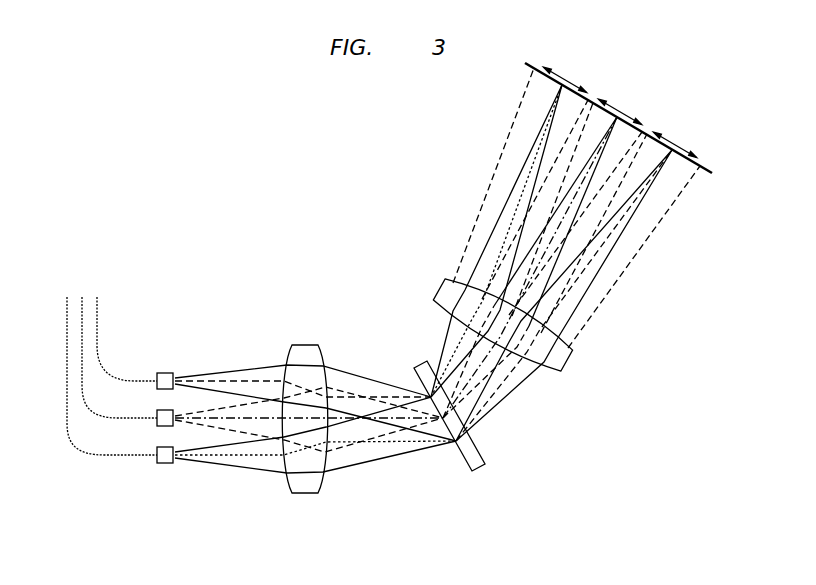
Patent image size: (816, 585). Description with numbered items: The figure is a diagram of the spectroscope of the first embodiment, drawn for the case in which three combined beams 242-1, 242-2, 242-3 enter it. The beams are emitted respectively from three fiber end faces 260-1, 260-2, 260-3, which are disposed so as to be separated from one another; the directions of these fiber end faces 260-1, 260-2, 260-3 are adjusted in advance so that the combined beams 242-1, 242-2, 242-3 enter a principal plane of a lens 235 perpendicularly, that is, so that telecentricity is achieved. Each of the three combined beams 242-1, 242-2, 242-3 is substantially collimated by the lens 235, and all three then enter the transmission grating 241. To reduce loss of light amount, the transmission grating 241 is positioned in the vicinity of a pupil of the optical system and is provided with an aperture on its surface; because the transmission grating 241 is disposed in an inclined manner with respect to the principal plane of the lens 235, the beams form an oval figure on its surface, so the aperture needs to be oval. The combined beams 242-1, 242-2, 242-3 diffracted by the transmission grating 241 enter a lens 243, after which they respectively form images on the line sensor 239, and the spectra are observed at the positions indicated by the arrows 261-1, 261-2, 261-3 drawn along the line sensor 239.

The line sensor 239 is at (710, 176).
The arrow indicating spectrum position 261-1 is at (687, 131).
The arrow indicating spectrum position 261-2 is at (630, 98).
The arrow indicating spectrum position 261-3 is at (573, 66).
The lens 243 is at (574, 358).
The transmission grating 241 is at (480, 472).
The lens 235 is at (305, 494).
The fiber end face 260-1 is at (163, 372).
The fiber end face 260-2 is at (157, 427).
The fiber end face 260-3 is at (163, 466).
The combined beam 242-1 is at (223, 370).
The combined beam 242-2 is at (212, 427).
The combined beam 242-3 is at (253, 470).